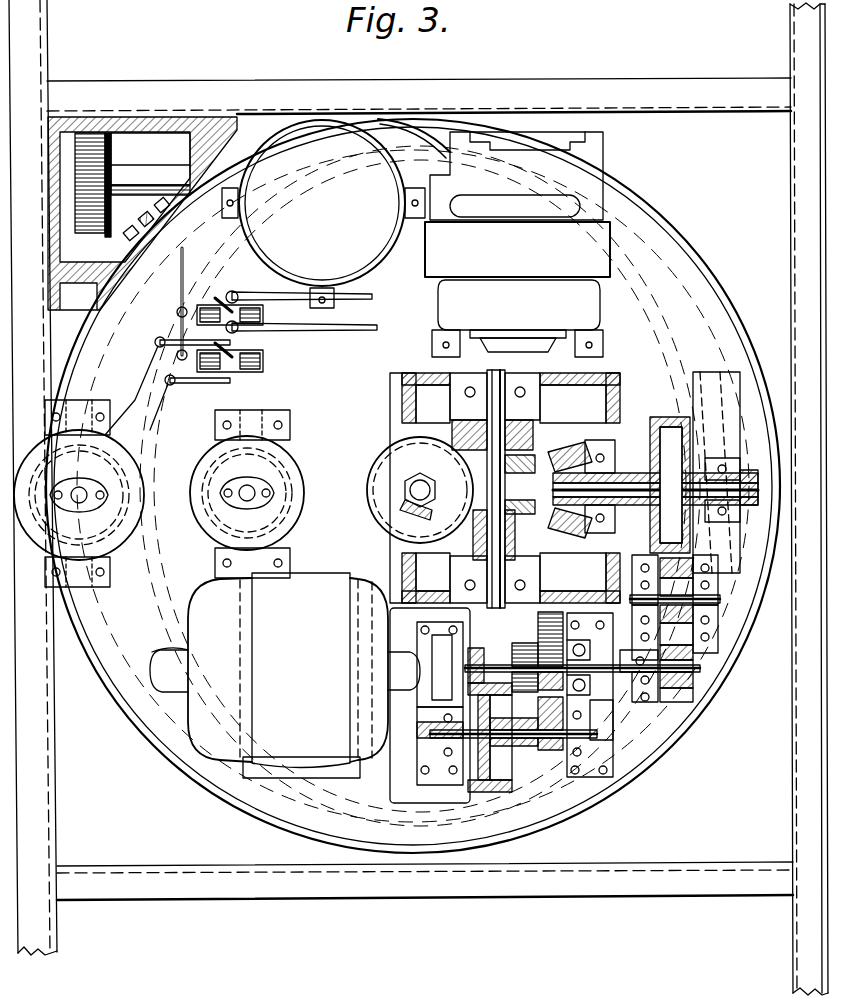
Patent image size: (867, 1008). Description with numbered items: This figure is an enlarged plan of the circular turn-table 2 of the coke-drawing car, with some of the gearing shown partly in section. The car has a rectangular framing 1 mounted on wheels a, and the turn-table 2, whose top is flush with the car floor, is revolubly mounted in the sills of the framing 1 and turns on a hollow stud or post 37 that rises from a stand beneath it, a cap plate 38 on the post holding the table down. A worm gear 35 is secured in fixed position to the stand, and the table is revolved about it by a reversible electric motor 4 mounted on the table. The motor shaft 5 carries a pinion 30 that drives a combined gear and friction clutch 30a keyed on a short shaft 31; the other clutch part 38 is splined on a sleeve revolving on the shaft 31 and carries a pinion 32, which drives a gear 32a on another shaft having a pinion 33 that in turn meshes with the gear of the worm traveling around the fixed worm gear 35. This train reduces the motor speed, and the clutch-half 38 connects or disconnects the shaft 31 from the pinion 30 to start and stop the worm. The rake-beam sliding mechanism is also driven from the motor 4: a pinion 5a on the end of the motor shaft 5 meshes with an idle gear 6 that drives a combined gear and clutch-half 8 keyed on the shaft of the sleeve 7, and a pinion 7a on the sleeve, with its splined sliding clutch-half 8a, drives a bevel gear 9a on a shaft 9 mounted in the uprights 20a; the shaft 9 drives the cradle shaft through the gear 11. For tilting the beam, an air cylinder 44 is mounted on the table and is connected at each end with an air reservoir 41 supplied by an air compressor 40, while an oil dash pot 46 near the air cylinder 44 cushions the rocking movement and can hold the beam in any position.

The rectangular framing 1 is at (160, 116).
The circular turn-table 2 is at (655, 230).
The wheels a is at (95, 152).
The reversible electric motor 4 is at (304, 704).
The motor shaft 5 is at (650, 700).
The pinion 5a is at (700, 682).
The idle gear 6 is at (690, 630).
The sleeve 7 is at (618, 462).
The pinion 7a is at (572, 448).
The combined gear and clutch-half 8 is at (690, 535).
The sliding clutch-half 8a is at (656, 528).
The shaft 9 is at (505, 482).
The bevel gear 9a is at (570, 535).
The gear 11 is at (533, 440).
The uprights 20a is at (410, 390).
The pinion 30 is at (476, 648).
The combined gear and friction clutch 30a is at (478, 795).
The short shaft 31 is at (420, 736).
The pinion 32 is at (550, 750).
The gear 32a is at (548, 612).
The pinion 33 is at (516, 650).
The worm gear 35 is at (330, 362).
The hollow stud or post 37 is at (420, 482).
The cap plate / clutch-half 38 is at (392, 470).
The air compressor 40 is at (432, 263).
The air reservoir 41 is at (323, 214).
The air cylinder 44 is at (112, 508).
The oil dash pot 46 is at (284, 500).